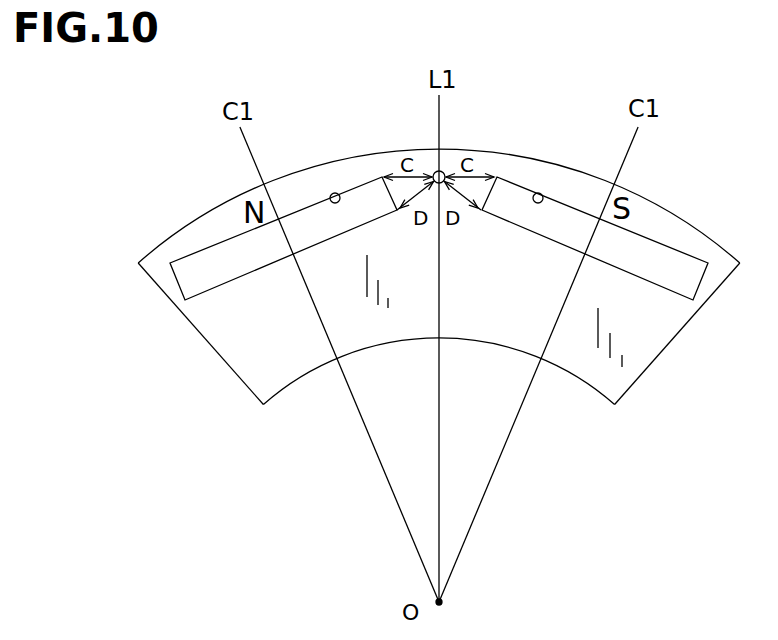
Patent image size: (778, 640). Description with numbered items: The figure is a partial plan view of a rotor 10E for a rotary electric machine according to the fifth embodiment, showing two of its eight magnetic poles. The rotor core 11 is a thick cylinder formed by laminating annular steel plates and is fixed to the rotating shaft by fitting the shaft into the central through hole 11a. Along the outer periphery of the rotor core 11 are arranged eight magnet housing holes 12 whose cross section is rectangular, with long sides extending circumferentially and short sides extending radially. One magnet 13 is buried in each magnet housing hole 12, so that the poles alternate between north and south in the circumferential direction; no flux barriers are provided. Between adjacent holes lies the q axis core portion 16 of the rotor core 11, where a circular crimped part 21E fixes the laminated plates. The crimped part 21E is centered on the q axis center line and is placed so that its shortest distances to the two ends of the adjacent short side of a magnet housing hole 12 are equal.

The rotor 10E is at (172, 193).
The rotor core 11 is at (644, 371).
The through hole 11a is at (286, 392).
The magnet housing hole 12 is at (328, 194).
The magnet 13 is at (312, 227).
The q axis core portion 16 is at (492, 206).
The crimped part 21E is at (434, 173).